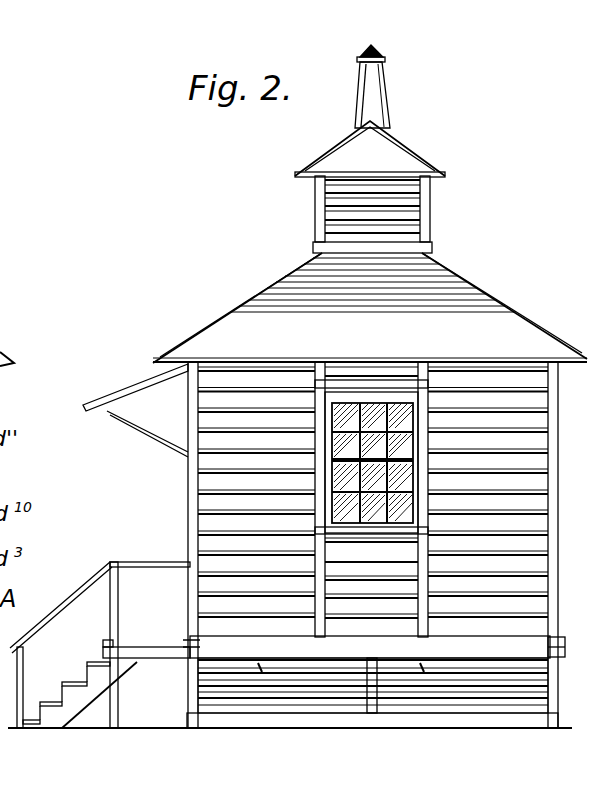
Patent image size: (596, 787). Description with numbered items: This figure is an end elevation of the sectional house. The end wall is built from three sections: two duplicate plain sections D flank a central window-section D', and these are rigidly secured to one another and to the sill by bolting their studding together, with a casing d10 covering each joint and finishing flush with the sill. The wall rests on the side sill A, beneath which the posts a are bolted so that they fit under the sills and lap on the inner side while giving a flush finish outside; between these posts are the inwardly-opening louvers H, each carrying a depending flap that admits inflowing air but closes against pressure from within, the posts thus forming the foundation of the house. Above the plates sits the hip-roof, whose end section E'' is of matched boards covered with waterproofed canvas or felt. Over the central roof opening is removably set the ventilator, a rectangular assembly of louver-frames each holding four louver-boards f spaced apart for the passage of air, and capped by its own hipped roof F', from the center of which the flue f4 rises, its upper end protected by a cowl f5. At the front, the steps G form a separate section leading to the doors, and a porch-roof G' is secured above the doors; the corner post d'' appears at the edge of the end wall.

The cowl f5 is at (372, 48).
The flue f4 is at (376, 91).
The roof E'' is at (370, 241).
The ventilator roof F' is at (388, 214).
The louver-board f is at (337, 210).
The corner posts d'' is at (362, 545).
The plain section D is at (358, 532).
The casing d10 is at (414, 559).
The porch-roof G' is at (135, 398).
The steps G is at (334, 626).
The side sill A is at (528, 653).
The post a is at (555, 696).
The louver H is at (262, 662).
The window-section D' is at (373, 699).